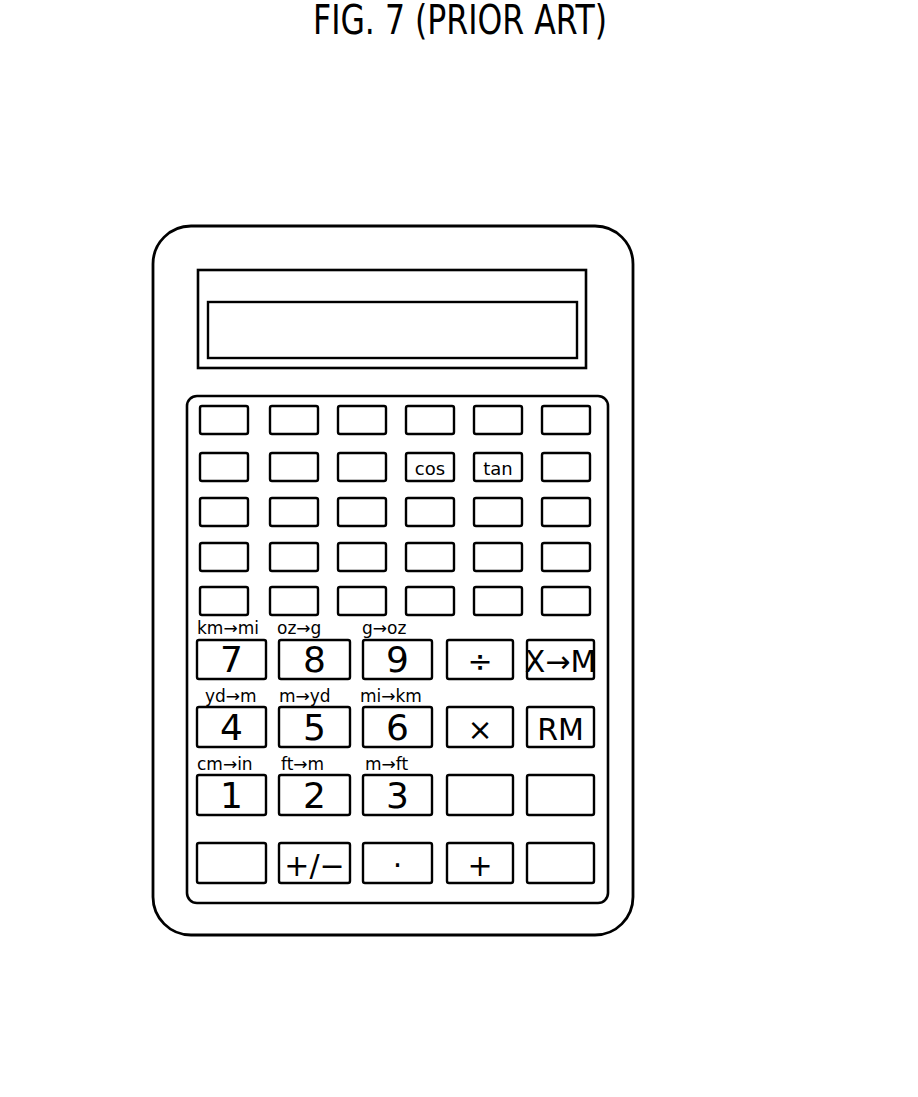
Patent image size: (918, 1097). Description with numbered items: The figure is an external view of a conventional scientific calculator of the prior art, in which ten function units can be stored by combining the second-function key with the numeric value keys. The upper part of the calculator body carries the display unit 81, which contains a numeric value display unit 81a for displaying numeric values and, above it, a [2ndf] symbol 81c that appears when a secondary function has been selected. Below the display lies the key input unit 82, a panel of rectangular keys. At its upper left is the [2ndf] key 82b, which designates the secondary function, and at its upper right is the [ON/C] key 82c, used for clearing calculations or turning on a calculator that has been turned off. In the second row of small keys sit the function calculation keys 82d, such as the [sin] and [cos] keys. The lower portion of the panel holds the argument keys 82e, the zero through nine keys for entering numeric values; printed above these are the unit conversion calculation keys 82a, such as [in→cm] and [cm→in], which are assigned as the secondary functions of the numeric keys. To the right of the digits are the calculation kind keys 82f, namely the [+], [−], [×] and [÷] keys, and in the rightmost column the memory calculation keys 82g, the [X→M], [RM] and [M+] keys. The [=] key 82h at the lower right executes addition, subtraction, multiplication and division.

The display unit 81 is at (586, 316).
The numeric value display unit 81a is at (458, 293).
The [2ndf] symbol 81c is at (325, 283).
The key input unit 82 is at (187, 553).
The unit conversion calculation key 82a is at (197, 829).
The [2ndf] key 82b is at (223, 407).
The [ON/C] key 82c is at (592, 424).
The function calculation key 82d is at (343, 456).
The argument key 82e is at (197, 867).
The calculation kind designating key 82f is at (510, 775).
The memory calculation key 82g is at (596, 806).
The [=] key 82h is at (598, 878).